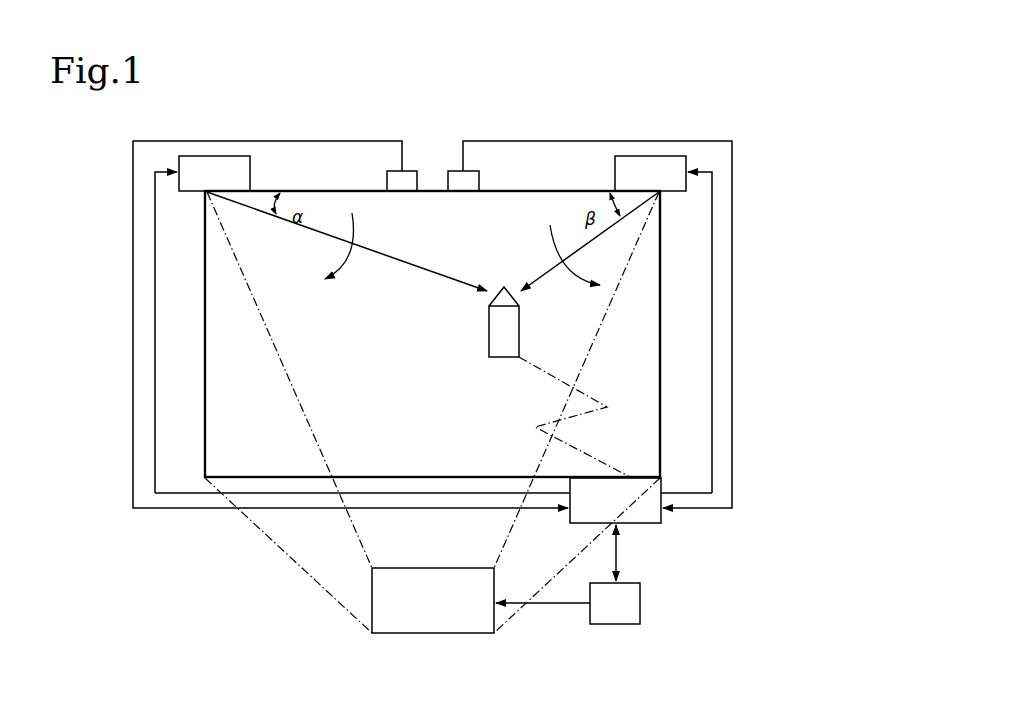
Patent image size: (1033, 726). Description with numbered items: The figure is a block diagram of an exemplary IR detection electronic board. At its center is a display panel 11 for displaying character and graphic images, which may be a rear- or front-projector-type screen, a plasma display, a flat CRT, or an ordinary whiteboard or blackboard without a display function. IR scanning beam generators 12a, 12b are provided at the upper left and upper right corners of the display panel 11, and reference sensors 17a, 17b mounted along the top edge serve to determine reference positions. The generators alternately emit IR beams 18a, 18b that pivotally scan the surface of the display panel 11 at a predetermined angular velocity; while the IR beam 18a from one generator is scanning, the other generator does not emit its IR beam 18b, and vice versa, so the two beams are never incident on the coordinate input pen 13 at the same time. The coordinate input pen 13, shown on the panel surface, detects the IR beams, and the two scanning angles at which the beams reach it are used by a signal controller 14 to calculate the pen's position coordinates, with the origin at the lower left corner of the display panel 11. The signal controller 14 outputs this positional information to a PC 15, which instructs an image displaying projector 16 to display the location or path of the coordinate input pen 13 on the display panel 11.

The display panel 11 is at (205, 377).
The IR scanning beam generator 12a is at (210, 155).
The IR scanning beam generator 12b is at (635, 155).
The coordinate input pen 13 is at (489, 330).
The signal controller 14 is at (640, 525).
The PC 15 is at (622, 625).
The image displaying projector 16 is at (453, 633).
The reference sensor 17a is at (387, 180).
The reference sensor 17b is at (479, 182).
The IR beam 18a is at (417, 268).
The IR beam 18b is at (538, 277).